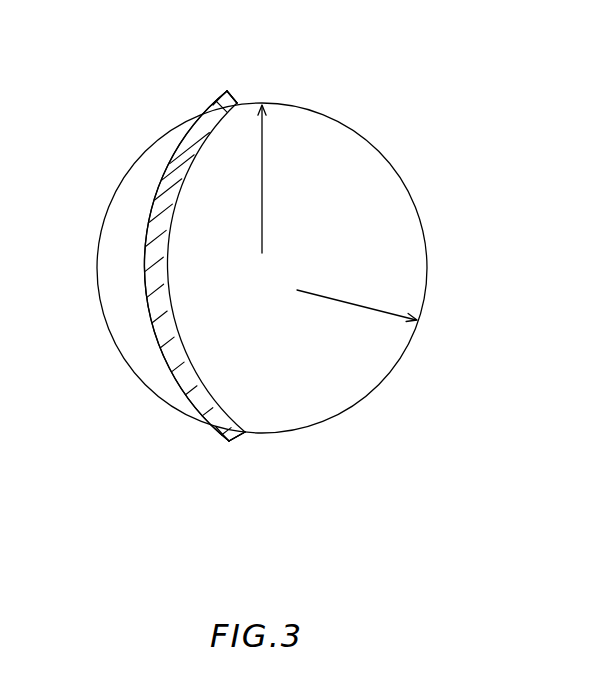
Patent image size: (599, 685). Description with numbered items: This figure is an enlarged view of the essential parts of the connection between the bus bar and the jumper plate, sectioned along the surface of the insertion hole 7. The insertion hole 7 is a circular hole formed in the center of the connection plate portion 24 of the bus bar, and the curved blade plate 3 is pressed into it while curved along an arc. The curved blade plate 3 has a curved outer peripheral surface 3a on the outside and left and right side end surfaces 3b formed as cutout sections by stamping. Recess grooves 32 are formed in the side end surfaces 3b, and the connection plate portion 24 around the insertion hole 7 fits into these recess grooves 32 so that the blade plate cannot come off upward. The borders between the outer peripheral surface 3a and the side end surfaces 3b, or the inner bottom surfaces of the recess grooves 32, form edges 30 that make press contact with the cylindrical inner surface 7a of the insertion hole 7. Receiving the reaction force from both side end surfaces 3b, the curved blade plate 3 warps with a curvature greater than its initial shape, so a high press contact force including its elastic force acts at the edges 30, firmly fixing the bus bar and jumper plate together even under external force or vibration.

The curved blade plate 3 is at (157, 323).
The outer peripheral surface 3a is at (152, 217).
The side end surfaces 3b is at (245, 103).
The insertion hole 7 is at (312, 190).
The cylindrical inner surface 7a is at (337, 213).
The connection plate portion 24 is at (458, 248).
The edges 30 is at (227, 93).
The recess grooves 32 is at (239, 85).